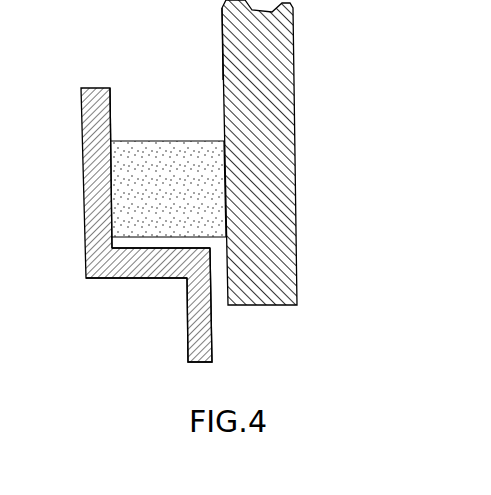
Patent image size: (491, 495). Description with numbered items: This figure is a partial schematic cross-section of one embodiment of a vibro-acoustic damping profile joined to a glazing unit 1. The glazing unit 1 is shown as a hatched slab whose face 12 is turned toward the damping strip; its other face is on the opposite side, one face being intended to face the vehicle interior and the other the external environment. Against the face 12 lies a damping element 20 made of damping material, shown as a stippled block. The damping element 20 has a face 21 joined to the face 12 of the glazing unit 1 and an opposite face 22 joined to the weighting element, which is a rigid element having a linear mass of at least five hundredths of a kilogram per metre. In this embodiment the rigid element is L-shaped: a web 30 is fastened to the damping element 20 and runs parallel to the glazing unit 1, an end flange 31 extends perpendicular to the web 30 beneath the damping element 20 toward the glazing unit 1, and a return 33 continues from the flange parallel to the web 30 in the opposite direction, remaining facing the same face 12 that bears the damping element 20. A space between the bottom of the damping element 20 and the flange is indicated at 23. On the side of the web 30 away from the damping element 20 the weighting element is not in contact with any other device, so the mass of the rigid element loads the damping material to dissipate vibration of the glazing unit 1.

The glazing unit 1 is at (277, 57).
The face of the glazing unit 12 is at (222, 43).
The damping element 20 is at (180, 160).
The face of the damping element 21 is at (225, 185).
The opposite face of the damping element 22 is at (112, 168).
The gap / bottom surface 23 is at (160, 237).
The web 30 is at (97, 207).
The end flange 31 is at (120, 265).
The return 33 is at (207, 334).